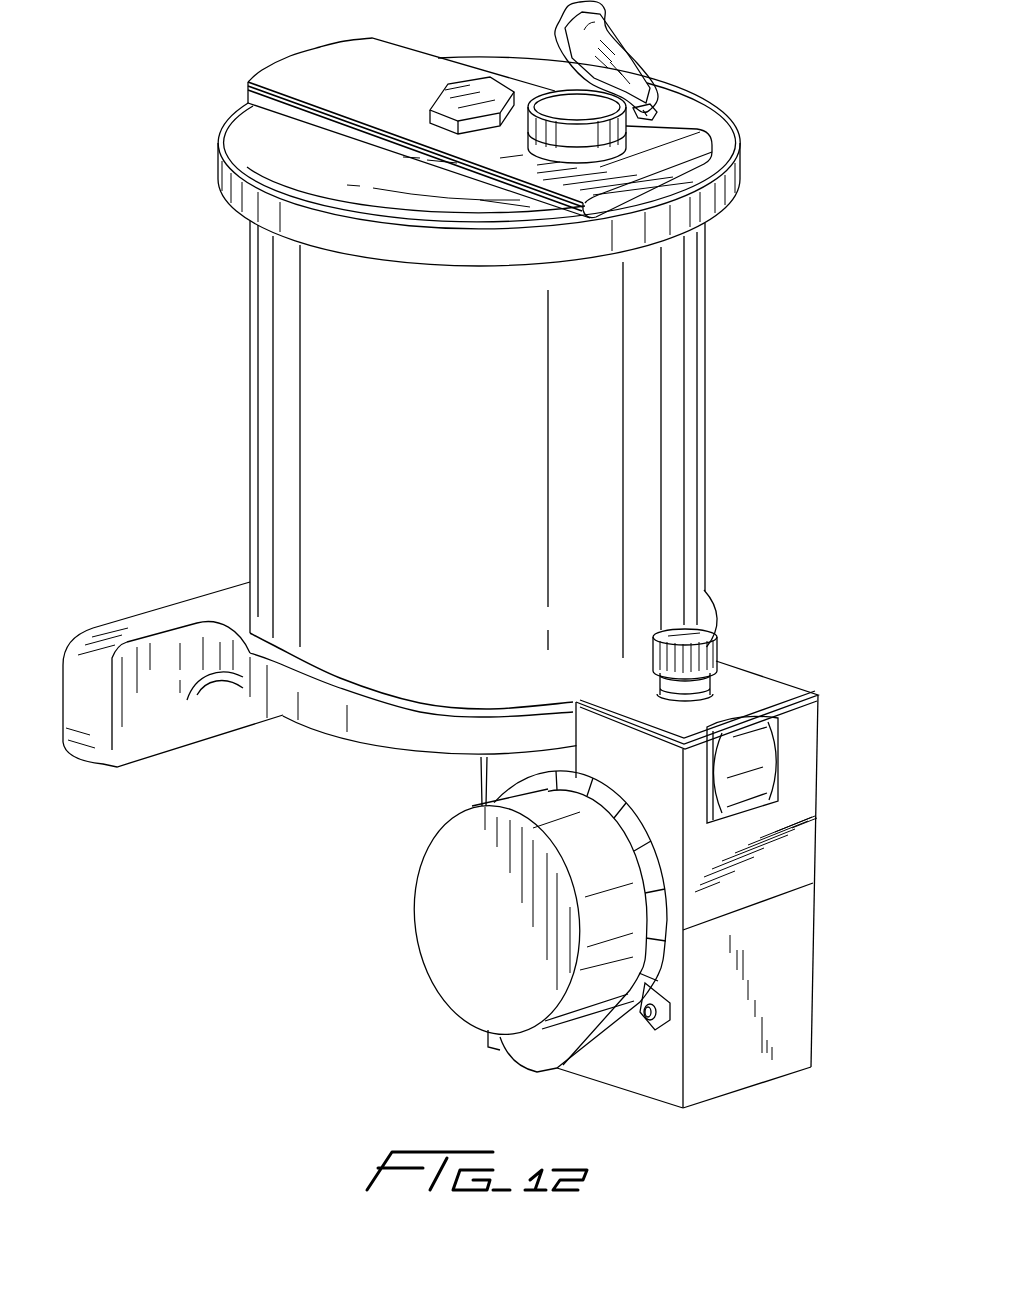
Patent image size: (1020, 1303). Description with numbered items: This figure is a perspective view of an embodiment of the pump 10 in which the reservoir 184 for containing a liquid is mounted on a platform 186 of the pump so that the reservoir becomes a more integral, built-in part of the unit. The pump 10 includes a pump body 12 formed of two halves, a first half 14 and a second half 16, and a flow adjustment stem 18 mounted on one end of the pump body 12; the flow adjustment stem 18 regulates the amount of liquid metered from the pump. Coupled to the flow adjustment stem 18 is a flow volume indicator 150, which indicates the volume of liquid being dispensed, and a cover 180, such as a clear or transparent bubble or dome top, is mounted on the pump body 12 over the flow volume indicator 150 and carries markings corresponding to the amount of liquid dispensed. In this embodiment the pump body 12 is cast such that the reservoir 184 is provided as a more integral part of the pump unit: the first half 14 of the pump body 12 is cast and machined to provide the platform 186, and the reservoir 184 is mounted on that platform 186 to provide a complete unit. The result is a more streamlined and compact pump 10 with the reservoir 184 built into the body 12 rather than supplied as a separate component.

The pump 10 is at (772, 472).
The pump body 12 is at (661, 789).
The first half 14 is at (802, 863).
The second half 16 is at (783, 1000).
The flow adjustment stem 18 is at (707, 657).
The flow volume indicator 150 is at (745, 757).
The cover 180 is at (770, 777).
The reservoir 184 is at (290, 397).
The platform 186 is at (360, 722).